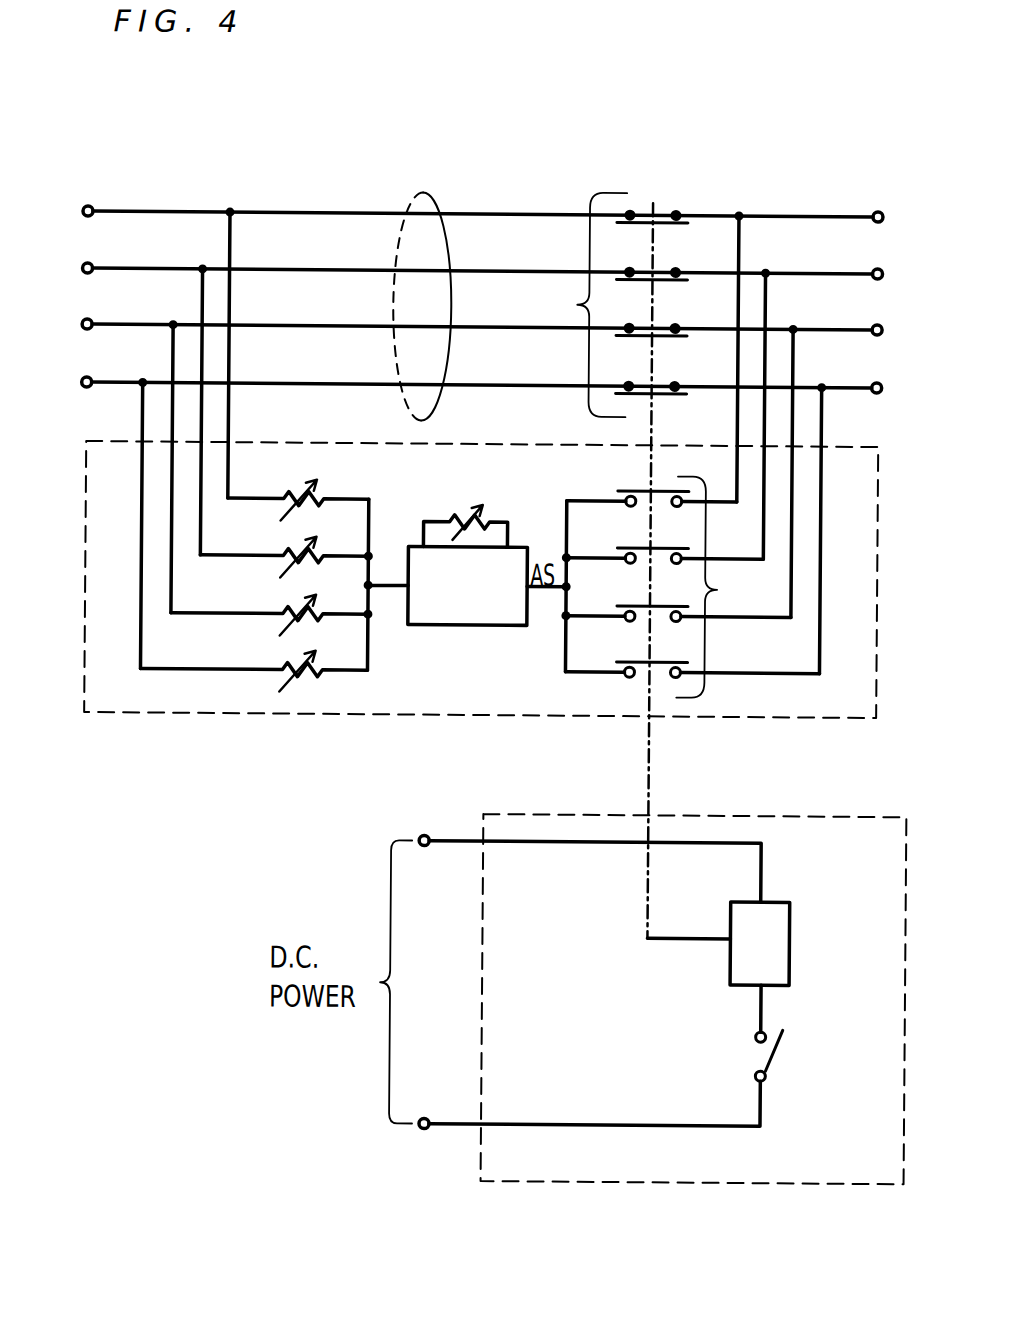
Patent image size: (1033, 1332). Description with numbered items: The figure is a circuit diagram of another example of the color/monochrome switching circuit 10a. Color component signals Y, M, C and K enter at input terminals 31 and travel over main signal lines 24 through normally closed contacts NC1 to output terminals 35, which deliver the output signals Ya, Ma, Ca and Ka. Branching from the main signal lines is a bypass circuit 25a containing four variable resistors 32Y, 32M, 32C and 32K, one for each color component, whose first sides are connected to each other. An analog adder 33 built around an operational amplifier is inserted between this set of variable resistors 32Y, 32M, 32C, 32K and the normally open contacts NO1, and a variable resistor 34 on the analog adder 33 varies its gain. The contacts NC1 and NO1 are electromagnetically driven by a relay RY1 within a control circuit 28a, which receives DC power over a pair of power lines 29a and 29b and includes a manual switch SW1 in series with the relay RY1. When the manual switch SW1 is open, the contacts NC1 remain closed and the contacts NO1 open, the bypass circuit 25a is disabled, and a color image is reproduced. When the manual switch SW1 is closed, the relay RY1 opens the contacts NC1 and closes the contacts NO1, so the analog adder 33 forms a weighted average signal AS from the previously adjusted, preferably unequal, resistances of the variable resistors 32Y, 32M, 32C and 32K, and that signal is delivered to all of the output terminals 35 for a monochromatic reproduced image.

The color/monochrome switching circuit 10a is at (542, 155).
The main signal lines 24 is at (436, 197).
The input terminals 31 is at (92, 207).
The output terminals 35 is at (878, 206).
The variable resistor 32Y is at (306, 492).
The variable resistor 32M is at (303, 549).
The variable resistor 32C is at (303, 605).
The variable resistor 32K is at (301, 660).
The analog adder 33 is at (478, 623).
The variable resistor 34 is at (450, 515).
The bypass circuit 25a is at (776, 714).
The control circuit 28a is at (758, 811).
The power line 29a is at (519, 842).
The power line 29b is at (515, 1118).
The normally closed contacts NC1 is at (568, 304).
The normally open contacts NO1 is at (724, 588).
The relay RY1 is at (797, 953).
The manual switch SW1 is at (778, 1047).